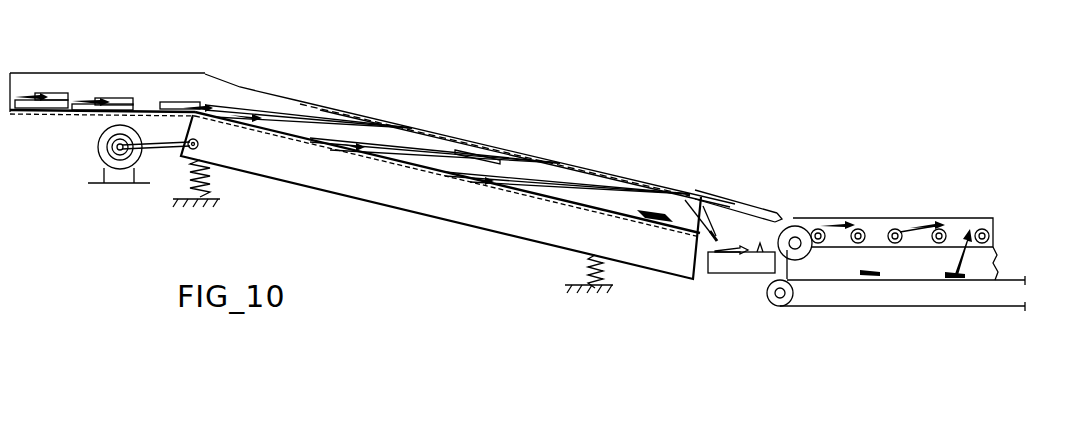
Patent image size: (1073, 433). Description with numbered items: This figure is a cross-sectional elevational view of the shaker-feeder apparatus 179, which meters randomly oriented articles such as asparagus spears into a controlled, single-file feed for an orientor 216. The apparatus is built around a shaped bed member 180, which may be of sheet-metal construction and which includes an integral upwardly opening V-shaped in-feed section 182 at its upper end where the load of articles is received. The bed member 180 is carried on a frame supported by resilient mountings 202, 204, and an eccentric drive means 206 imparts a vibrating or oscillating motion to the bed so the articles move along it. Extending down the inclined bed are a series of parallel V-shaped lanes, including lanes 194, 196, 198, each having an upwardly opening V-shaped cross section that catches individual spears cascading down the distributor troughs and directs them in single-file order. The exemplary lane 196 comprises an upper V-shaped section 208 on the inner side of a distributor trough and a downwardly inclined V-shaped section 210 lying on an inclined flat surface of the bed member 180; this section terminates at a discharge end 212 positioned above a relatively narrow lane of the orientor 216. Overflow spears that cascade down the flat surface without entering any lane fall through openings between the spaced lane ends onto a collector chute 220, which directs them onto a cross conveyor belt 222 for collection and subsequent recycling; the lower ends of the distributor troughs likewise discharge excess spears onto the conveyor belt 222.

The shaker-feeder apparatus 179 is at (401, 93).
The bed member 180 is at (238, 90).
The in-feed section 182 is at (108, 83).
The V-shaped lane 194 is at (314, 121).
The V-shaped lane 196 is at (436, 153).
The V-shaped lane 198 is at (551, 183).
The resilient mounting 202 is at (211, 184).
The resilient mounting 204 is at (582, 262).
The eccentric drive means 206 is at (100, 156).
The upper V-shaped section 208 is at (473, 153).
The downwardly inclined V-shaped section 210 is at (583, 168).
The discharge end 212 is at (766, 207).
The orientor 216 is at (905, 209).
The collector chute 220 is at (713, 237).
The cross conveyor belt 222 is at (733, 265).